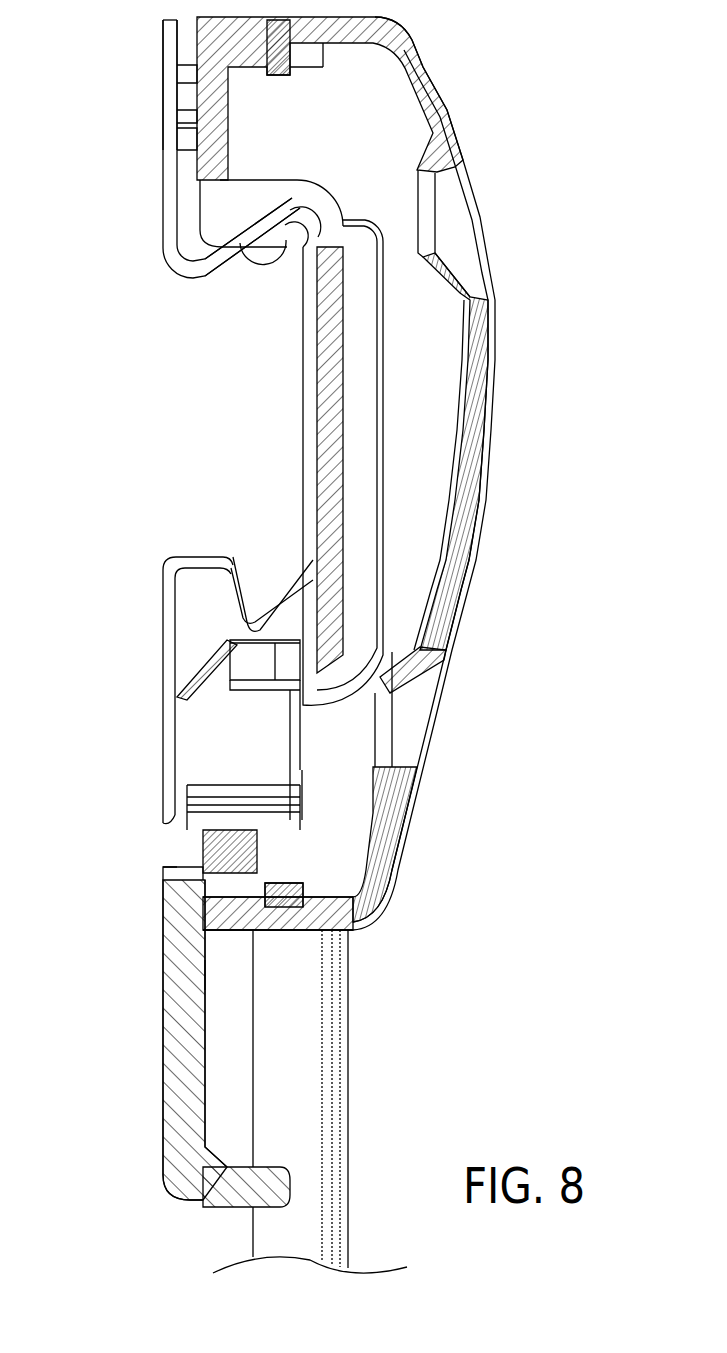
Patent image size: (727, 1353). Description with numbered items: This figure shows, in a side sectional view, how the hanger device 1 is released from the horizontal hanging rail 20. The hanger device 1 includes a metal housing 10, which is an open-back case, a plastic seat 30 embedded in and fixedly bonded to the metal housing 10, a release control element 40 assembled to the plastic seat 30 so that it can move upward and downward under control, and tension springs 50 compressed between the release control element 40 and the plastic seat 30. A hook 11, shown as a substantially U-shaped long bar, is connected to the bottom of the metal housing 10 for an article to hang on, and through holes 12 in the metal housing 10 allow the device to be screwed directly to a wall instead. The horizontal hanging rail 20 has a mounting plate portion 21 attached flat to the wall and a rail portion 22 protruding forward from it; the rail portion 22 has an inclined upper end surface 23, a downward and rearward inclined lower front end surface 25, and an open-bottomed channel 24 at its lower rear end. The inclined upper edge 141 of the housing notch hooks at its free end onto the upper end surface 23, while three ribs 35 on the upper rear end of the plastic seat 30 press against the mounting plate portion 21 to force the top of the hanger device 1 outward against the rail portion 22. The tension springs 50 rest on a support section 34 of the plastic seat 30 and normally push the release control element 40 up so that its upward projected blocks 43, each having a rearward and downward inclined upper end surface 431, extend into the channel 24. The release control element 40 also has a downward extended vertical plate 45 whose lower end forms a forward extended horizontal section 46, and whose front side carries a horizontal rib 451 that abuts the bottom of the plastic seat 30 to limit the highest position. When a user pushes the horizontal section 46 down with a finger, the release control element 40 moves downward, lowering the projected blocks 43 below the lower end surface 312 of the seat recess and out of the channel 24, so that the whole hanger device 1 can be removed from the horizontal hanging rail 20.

The hanger device 1 is at (503, 393).
The metal housing 10 is at (480, 523).
The hook 11 is at (350, 1088).
The through holes 12 is at (427, 213).
The inclined upper edge 141 is at (290, 205).
The horizontal hanging rail 20 is at (160, 278).
The mounting plate portion 21 is at (177, 90).
The rail portion 22 is at (308, 393).
The upper end surface 23 is at (233, 260).
The open-bottomed channel 24 is at (188, 590).
The inclined lower front end surface 25 is at (290, 605).
The plastic seat 30 is at (358, 250).
The lower end surface 312 is at (258, 618).
The support section 34 is at (177, 807).
The ribs 35 is at (177, 123).
The release control element 40 is at (160, 900).
The upward projected blocks 43 is at (208, 557).
The upper end surface 431 is at (170, 662).
The vertical plate 45 is at (163, 1088).
The horizontal rib 451 is at (205, 975).
The horizontal section 46 is at (197, 1200).
The tension springs 50 is at (230, 838).